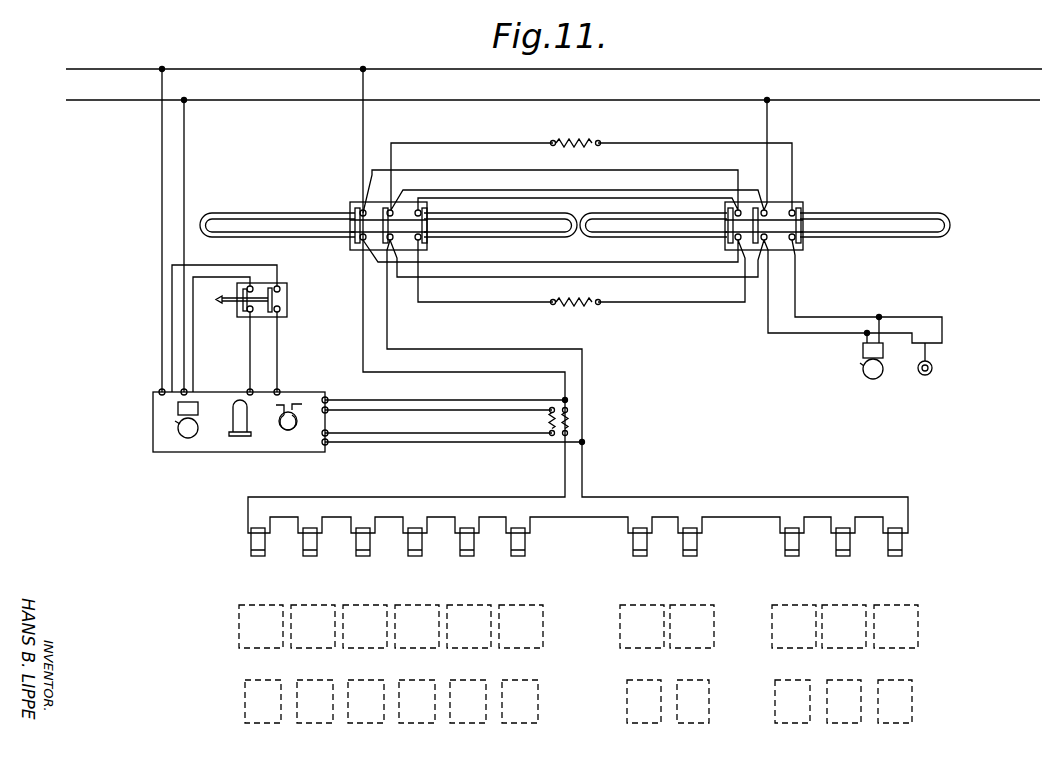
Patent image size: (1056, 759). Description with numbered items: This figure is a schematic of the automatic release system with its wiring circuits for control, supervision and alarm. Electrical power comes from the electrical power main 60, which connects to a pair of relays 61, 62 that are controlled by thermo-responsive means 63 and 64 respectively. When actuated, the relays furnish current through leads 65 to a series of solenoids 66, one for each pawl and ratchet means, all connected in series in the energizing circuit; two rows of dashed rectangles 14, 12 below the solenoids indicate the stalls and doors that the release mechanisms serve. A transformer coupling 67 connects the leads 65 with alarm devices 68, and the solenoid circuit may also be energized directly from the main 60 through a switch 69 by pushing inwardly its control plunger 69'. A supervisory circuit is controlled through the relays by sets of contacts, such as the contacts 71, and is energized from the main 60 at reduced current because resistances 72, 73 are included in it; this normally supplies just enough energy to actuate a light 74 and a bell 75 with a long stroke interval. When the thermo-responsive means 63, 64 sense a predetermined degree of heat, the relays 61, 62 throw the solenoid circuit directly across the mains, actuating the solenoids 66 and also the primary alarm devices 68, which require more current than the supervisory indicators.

The electrical power main 60 is at (67, 72).
The relay 61 is at (356, 251).
The relay 62 is at (800, 250).
The thermo-responsive means 63 is at (536, 242).
The thermo-responsive means 64 is at (898, 247).
The leads 65 is at (380, 334).
The solenoids 66 is at (628, 549).
The transformer coupling 67 is at (556, 441).
The alarm devices 68 is at (268, 453).
The switch 69 is at (249, 319).
The control plunger 69' is at (232, 313).
The contacts 71 is at (428, 243).
The resistance 72 is at (820, 246).
The resistance 73 is at (577, 311).
The light 74 is at (924, 376).
The bell 75 is at (874, 380).
The compartments 14 is at (364, 600).
The compartments 12 is at (393, 723).